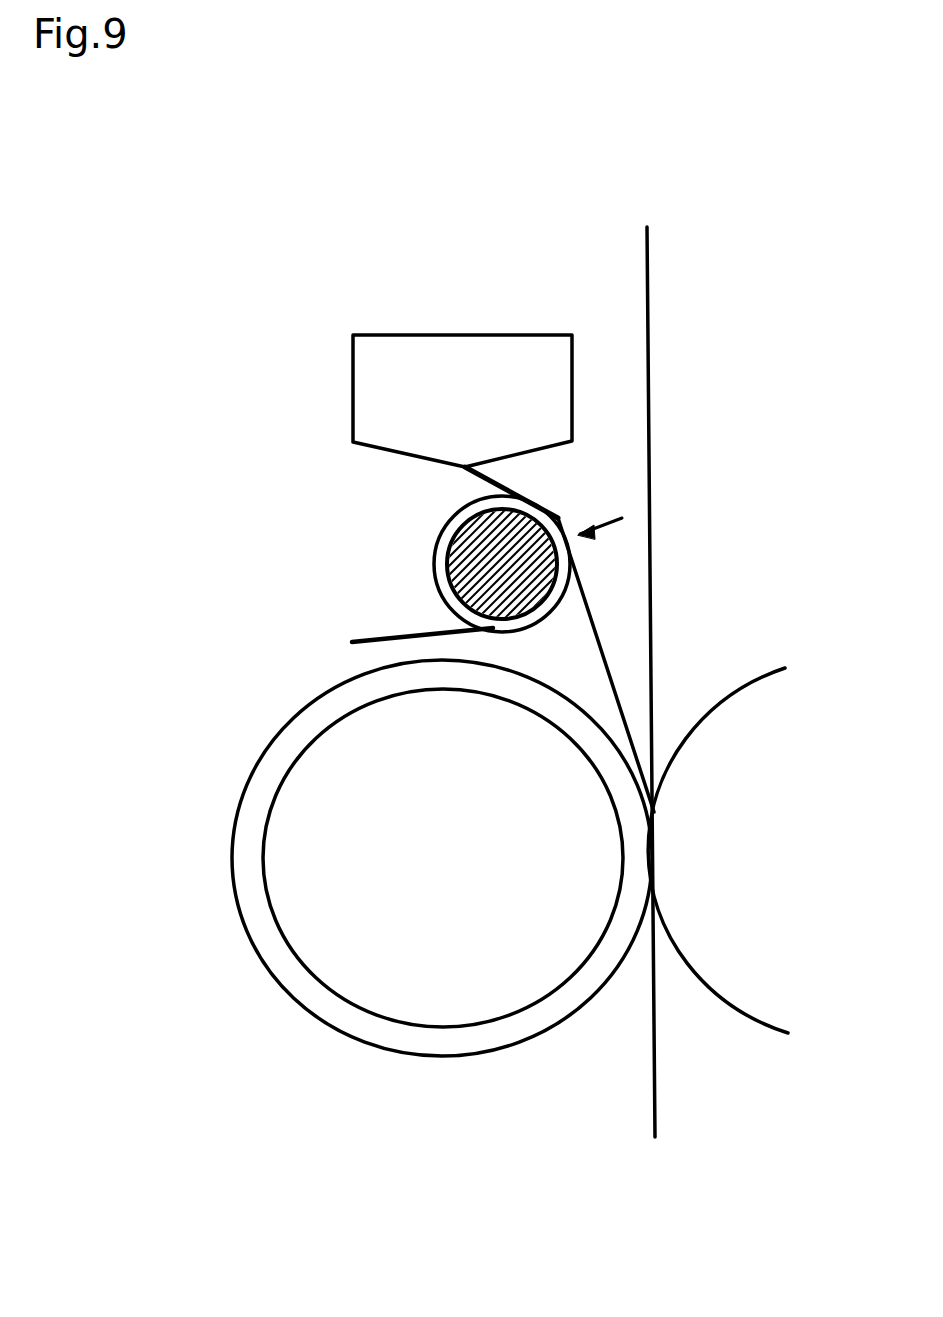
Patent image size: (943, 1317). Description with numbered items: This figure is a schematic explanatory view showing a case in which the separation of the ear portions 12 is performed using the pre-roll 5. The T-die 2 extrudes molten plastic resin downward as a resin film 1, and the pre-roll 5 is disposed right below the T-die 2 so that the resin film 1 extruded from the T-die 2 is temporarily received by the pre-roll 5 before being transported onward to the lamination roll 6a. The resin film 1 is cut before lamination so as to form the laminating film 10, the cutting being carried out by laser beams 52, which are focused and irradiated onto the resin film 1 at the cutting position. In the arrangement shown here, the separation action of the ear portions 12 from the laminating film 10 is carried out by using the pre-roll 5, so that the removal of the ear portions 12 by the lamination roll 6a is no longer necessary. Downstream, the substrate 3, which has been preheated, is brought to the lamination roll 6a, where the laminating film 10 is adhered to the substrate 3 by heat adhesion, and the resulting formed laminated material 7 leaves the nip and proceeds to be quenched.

The resin film 1 is at (512, 490).
The T-die 2 is at (393, 407).
The substrate 3 is at (648, 265).
The pre-roll 5 is at (443, 563).
The lamination roll 6a is at (348, 908).
The laminated material 7 is at (656, 1095).
The laminating film 10 is at (600, 642).
The ear portions 12 is at (357, 640).
The laser beams 52 is at (608, 526).